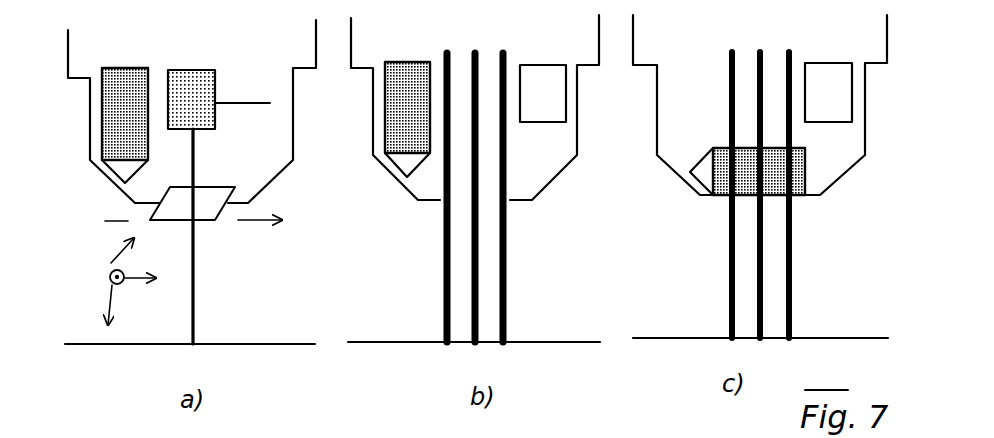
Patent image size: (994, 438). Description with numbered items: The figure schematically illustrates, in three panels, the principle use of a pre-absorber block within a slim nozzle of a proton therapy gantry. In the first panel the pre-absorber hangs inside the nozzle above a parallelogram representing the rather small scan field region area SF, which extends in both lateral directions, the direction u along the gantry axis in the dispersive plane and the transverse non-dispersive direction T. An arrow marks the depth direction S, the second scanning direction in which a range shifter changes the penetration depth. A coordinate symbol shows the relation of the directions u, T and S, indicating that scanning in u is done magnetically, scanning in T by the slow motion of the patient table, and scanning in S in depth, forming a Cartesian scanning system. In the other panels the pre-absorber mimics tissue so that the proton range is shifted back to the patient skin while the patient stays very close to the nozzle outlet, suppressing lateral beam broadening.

The scan field region area SF is at (200, 205).
The direction U u is at (213, 250).
The transverse non-dispersive direction T is at (119, 242).
The second direction S of scanning S is at (118, 303).